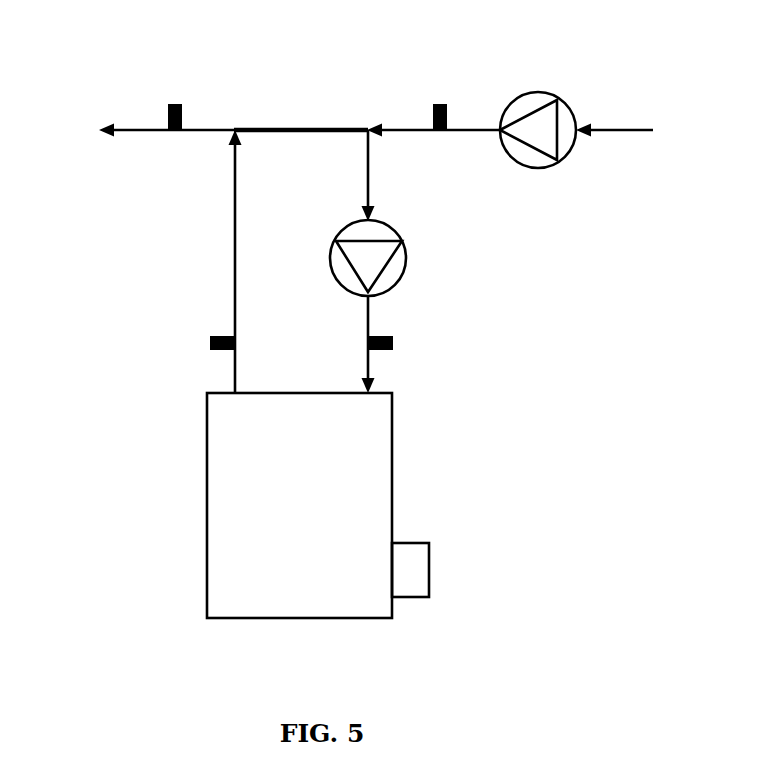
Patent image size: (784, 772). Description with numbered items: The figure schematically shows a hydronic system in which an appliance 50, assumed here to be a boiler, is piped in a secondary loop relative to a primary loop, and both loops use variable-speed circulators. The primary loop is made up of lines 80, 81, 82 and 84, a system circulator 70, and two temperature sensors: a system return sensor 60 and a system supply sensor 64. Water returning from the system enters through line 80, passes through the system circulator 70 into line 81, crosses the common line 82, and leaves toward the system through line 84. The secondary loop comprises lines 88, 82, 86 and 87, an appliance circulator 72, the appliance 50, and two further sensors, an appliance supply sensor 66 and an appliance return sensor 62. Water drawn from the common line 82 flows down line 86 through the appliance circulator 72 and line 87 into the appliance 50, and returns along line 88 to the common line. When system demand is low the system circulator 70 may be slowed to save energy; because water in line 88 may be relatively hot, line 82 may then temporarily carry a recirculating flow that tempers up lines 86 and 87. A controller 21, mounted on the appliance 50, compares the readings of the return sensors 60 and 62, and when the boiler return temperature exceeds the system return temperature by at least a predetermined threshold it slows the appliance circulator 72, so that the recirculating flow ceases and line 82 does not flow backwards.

The line 84 is at (132, 128).
The temperature sensor 64 is at (184, 112).
The line 82 is at (296, 127).
The line 81 is at (398, 127).
The temperature sensor 60 is at (448, 110).
The system circulator 70 is at (555, 93).
The line 80 is at (624, 127).
The line 88 is at (234, 180).
The line 86 is at (369, 176).
The appliance circulator 72 is at (405, 252).
The temperature sensor 66 is at (216, 336).
The temperature sensor 62 is at (394, 336).
The line 87 is at (370, 378).
The appliance 50 is at (299, 505).
The controller 21 is at (410, 570).